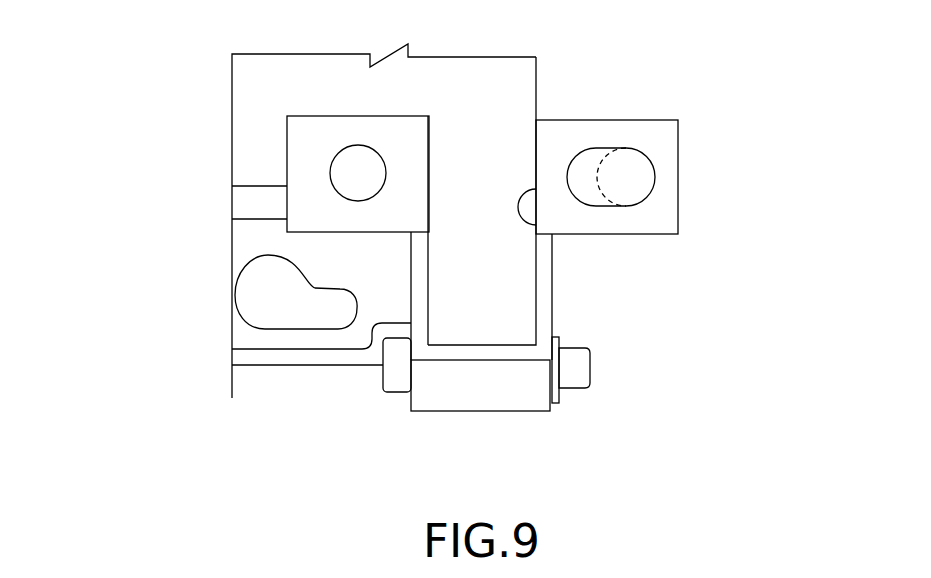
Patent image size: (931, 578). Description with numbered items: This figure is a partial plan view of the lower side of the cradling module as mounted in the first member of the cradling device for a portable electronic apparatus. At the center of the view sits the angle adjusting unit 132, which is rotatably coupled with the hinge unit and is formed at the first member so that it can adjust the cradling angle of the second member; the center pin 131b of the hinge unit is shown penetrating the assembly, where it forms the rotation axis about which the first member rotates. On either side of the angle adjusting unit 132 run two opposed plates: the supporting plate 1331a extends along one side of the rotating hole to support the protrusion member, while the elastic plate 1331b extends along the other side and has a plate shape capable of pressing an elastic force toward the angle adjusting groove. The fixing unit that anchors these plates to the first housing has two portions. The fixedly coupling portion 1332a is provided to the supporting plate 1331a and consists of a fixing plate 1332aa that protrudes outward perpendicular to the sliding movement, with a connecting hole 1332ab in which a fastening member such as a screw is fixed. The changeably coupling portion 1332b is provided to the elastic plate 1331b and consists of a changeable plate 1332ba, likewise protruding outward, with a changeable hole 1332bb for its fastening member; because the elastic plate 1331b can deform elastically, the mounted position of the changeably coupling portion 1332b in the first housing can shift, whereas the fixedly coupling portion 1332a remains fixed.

The fixedly coupling portion 1332a is at (140, 118).
The fixing plate 1332aa is at (303, 136).
The connecting hole 1332ab is at (338, 168).
The changeably coupling portion 1332b is at (787, 85).
The changeable plate 1332ba is at (667, 178).
The changeable hole 1332bb is at (607, 153).
The supporting plate 1331a is at (420, 288).
The elastic plate 1331b is at (545, 283).
The angle adjusting unit 132 is at (482, 398).
The center pin 131b is at (580, 368).